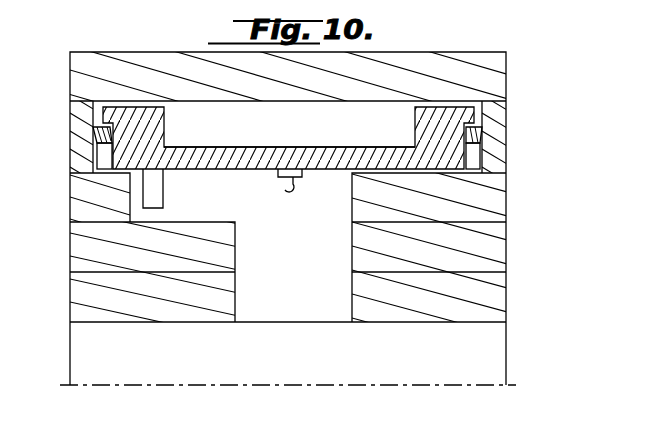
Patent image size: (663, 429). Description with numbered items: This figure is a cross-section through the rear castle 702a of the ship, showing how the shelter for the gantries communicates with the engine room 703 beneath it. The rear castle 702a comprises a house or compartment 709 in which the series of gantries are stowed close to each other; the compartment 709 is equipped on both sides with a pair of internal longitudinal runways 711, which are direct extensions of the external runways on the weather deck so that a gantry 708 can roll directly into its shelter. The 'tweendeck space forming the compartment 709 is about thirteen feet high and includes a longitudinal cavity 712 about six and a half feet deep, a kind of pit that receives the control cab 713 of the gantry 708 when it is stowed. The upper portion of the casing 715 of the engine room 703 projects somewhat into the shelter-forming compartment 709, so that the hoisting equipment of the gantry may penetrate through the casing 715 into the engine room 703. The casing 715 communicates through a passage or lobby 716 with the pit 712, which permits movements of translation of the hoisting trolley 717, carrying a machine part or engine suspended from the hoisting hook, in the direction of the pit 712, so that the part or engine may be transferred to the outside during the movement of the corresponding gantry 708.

The rear castle 702a is at (433, 53).
The engine room 703 is at (288, 353).
The gantry 708 is at (277, 150).
The compartment 709 is at (288, 138).
The internal longitudinal runways 711 is at (92, 138).
The longitudinal cavity 712 is at (132, 215).
The control cab 713 is at (153, 188).
The casing 715 is at (236, 258).
The passage 716 is at (187, 212).
The hoisting trolley 717 is at (299, 177).